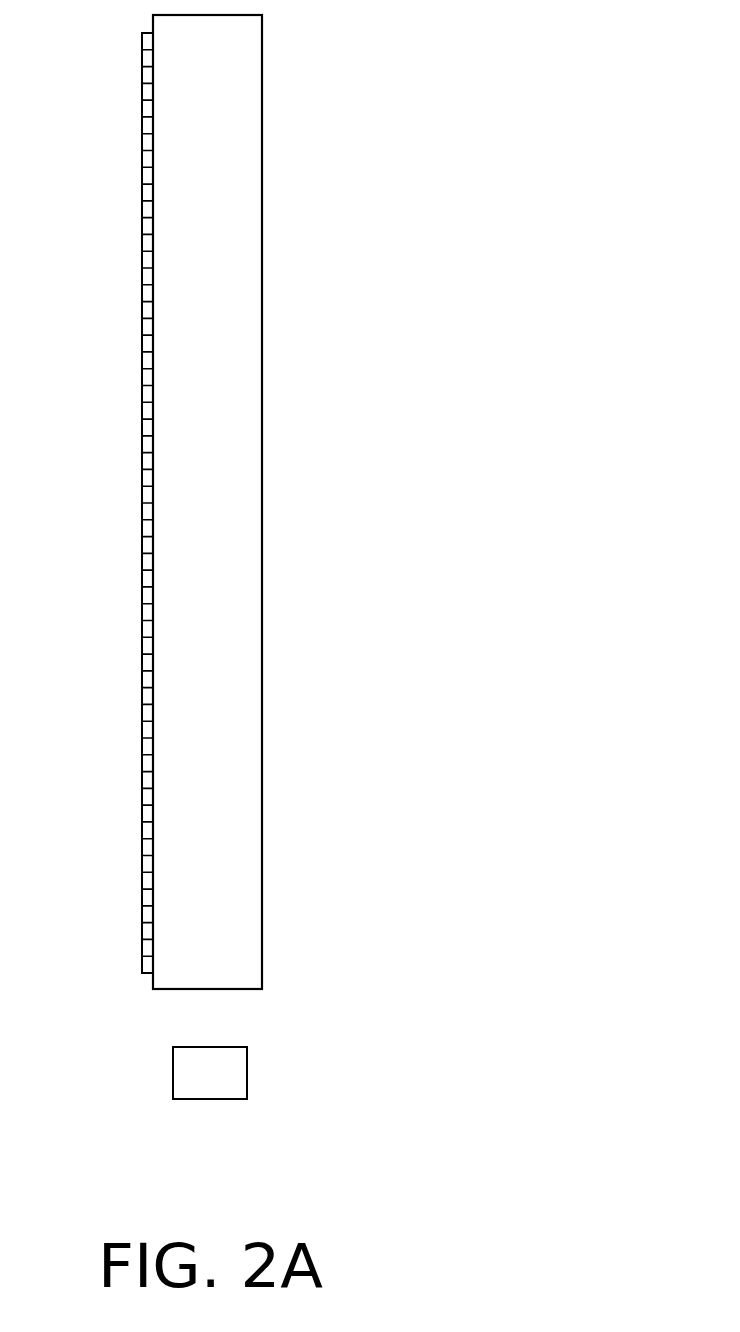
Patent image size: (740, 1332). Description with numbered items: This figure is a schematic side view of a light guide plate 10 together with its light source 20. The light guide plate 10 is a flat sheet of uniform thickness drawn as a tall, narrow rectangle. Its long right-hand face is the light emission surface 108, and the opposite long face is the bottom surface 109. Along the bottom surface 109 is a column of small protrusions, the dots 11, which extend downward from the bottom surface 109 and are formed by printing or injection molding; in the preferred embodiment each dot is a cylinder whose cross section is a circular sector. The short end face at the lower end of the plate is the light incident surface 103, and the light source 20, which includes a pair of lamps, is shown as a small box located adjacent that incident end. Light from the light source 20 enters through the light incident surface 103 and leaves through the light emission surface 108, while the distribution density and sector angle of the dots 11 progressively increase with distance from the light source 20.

The light guide plate 10 is at (236, 520).
The light emission surface 108 is at (280, 635).
The dots 11 is at (147, 765).
The bottom surface 109 is at (140, 983).
The light incident surface 103 is at (224, 1004).
The light source 20 is at (230, 1078).